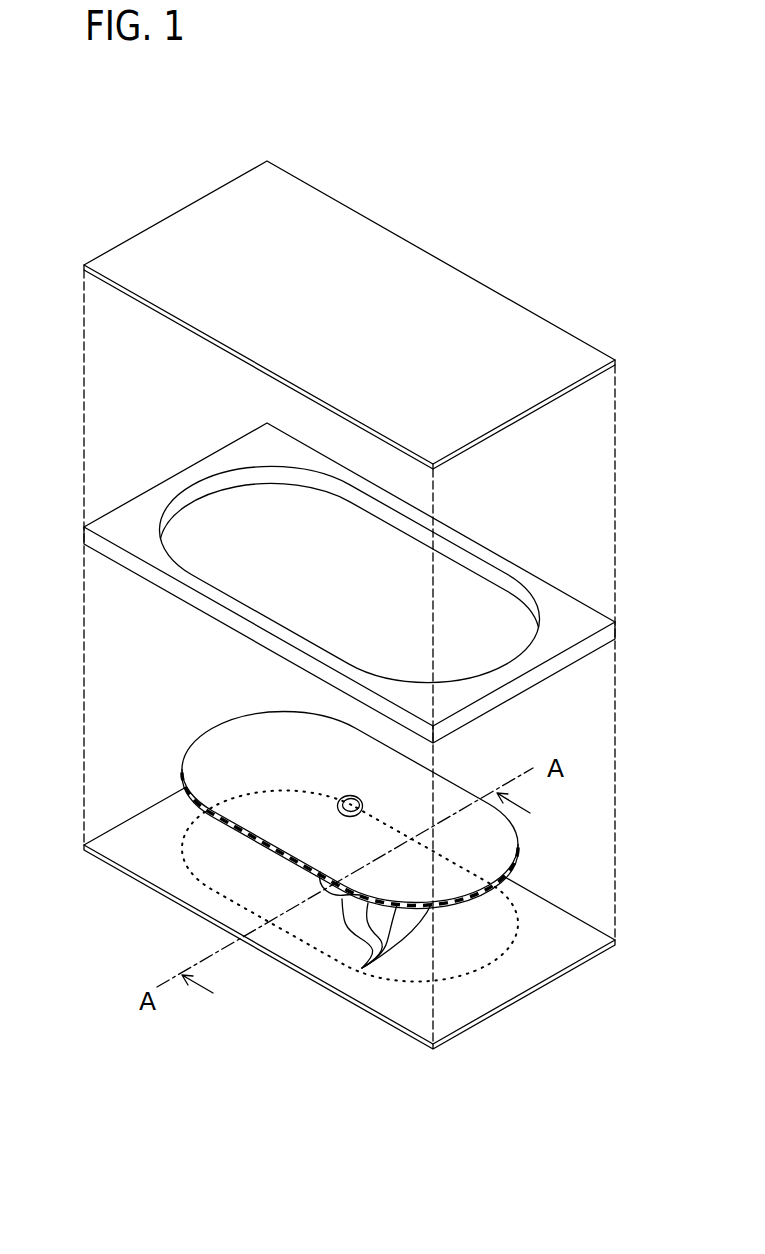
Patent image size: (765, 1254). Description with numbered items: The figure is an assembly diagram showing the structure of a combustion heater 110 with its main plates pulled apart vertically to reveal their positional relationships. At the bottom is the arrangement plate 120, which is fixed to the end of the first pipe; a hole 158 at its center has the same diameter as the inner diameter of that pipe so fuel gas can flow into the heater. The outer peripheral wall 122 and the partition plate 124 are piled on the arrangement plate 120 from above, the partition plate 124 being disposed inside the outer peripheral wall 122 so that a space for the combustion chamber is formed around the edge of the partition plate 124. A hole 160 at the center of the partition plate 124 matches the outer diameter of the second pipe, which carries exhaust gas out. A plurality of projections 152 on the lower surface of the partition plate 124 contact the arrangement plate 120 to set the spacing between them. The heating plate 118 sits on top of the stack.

The combustion heater 110 is at (244, 138).
The heating plate 118 is at (524, 307).
The outer peripheral wall 122 is at (526, 572).
The partition plate 124 is at (210, 753).
The arrangement plate 120 is at (104, 856).
The hole 160 is at (338, 805).
The hole 158 is at (321, 884).
The projections 152 is at (362, 968).